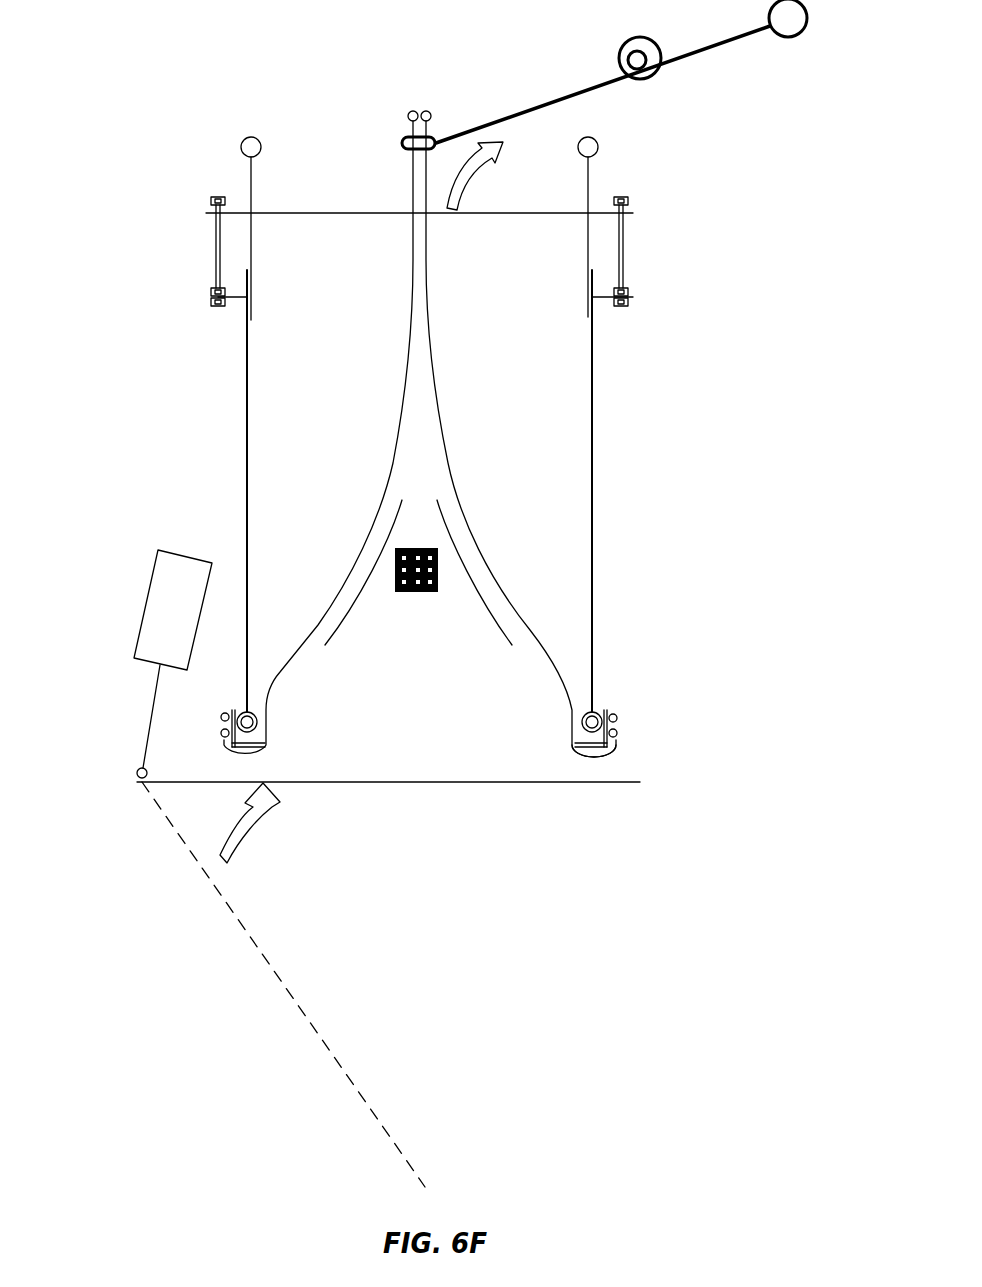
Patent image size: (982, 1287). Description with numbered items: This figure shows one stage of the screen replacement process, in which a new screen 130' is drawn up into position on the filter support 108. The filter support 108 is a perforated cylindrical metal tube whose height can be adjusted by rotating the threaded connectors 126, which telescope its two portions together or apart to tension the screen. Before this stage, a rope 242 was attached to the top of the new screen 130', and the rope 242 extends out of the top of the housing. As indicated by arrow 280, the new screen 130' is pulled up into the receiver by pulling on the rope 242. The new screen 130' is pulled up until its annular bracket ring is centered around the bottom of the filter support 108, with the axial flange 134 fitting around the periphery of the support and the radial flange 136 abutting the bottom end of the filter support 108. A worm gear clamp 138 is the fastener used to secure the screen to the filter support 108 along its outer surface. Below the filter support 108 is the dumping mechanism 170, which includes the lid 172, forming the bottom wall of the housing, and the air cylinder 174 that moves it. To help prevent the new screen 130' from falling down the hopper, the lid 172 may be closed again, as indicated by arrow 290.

The filter support 108 is at (593, 607).
The threaded connectors 126 is at (216, 255).
The new screen 130' is at (420, 434).
The axial flange 134 is at (610, 747).
The radial flange 136 is at (608, 712).
The worm gear clamp 138 is at (592, 748).
The dumping mechanism 170 is at (138, 780).
The lid 172 is at (612, 784).
The air cylinder 174 is at (147, 597).
The rope 242 is at (543, 108).
The arrow (step 280) 280 is at (468, 170).
The arrow (step 290) 290 is at (258, 833).